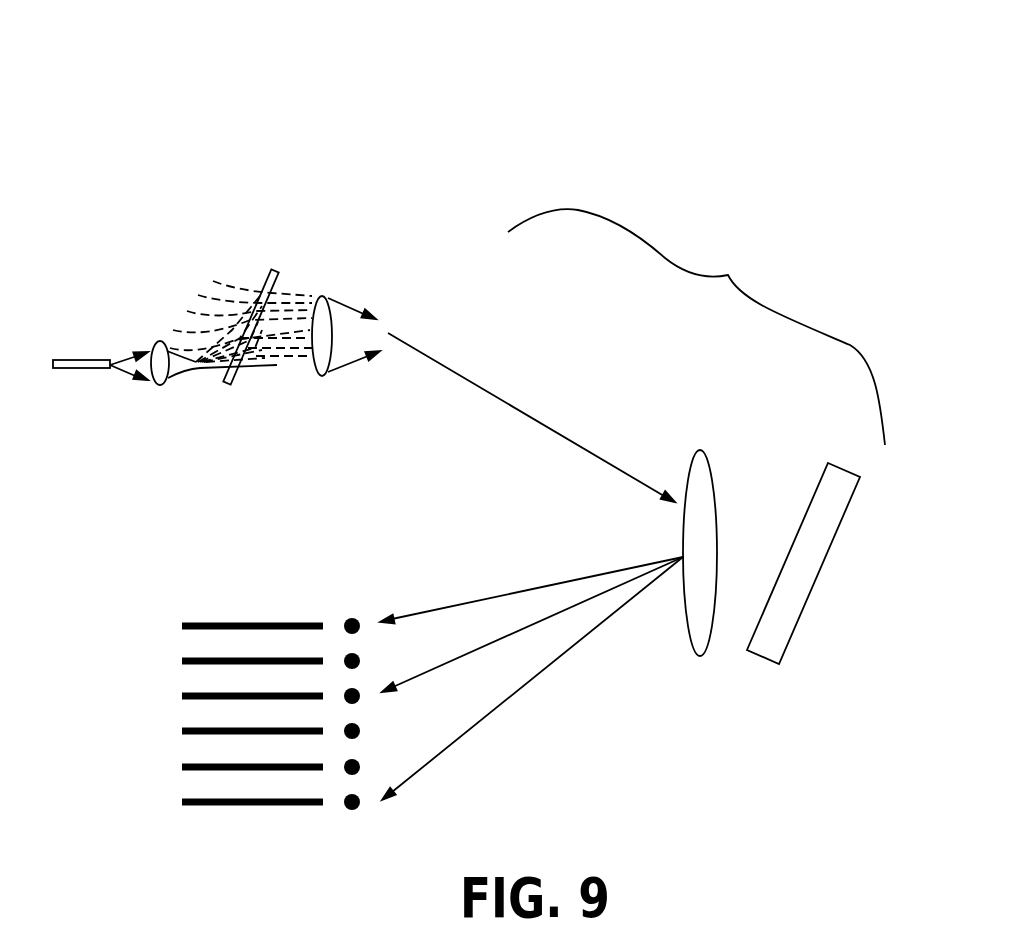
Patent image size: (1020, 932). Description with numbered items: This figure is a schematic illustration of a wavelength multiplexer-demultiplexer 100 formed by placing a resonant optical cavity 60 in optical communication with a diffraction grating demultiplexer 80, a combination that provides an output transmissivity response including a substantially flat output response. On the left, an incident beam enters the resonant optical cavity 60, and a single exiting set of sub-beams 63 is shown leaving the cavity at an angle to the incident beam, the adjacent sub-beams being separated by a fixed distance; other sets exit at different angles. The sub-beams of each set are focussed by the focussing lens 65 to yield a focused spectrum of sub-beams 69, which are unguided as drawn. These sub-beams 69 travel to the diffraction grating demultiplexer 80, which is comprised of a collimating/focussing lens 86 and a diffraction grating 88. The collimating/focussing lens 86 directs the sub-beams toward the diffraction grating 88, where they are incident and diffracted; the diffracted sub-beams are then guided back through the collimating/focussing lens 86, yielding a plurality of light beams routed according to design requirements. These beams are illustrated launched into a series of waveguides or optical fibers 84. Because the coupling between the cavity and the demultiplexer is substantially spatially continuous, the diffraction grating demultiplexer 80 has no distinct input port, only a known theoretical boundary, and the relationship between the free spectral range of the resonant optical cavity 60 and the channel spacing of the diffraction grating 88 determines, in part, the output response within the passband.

The wavelength multiplexer-demultiplexer 100 is at (418, 152).
The resonant optical cavity 60 is at (264, 254).
The exiting set of sub-beams 63 is at (283, 370).
The focussing lens 65 is at (320, 376).
The focused spectrum of sub-beams 69 is at (386, 312).
The diffraction grating demultiplexer 80 is at (696, 327).
The waveguides or optical fibers 84 is at (267, 823).
The collimating/focussing lens 86 is at (700, 656).
The diffraction grating 88 is at (800, 615).